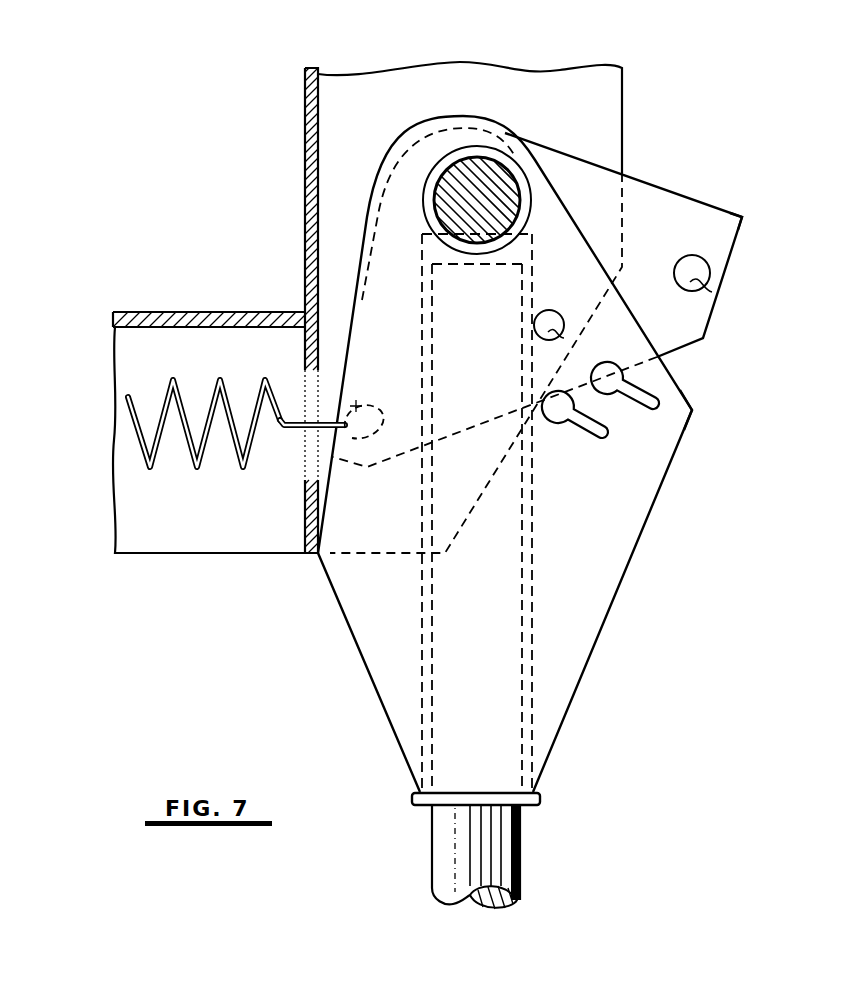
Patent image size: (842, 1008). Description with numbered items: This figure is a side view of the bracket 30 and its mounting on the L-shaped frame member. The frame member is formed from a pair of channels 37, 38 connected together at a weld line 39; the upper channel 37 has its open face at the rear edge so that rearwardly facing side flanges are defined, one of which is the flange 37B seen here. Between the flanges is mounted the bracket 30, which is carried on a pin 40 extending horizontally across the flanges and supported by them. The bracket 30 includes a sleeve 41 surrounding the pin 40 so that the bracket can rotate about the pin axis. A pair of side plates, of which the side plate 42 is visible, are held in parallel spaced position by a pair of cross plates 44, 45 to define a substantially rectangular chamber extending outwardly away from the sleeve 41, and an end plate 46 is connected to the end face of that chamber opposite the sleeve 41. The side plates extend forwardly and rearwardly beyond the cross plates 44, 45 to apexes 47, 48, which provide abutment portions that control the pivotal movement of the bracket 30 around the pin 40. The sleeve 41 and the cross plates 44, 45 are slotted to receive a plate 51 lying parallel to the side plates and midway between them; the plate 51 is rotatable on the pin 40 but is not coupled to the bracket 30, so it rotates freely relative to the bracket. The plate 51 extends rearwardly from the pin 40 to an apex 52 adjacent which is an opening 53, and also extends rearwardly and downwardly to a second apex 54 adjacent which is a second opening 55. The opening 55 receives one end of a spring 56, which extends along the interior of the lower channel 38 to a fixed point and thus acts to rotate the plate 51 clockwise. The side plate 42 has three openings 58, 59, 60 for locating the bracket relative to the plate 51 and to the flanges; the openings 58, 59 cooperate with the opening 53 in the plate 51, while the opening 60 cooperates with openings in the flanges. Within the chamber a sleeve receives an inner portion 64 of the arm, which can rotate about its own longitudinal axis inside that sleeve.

The bracket 30 is at (652, 529).
The channel 37 is at (303, 155).
The side flange 37B is at (612, 88).
The channel 38 is at (190, 310).
The weld line 39 is at (300, 338).
The pin 40 is at (492, 180).
The sleeve 41 is at (536, 199).
The side plate 42 is at (582, 580).
The cross plate 44 is at (534, 678).
The cross plate 45 is at (420, 680).
The end plate 46 is at (541, 801).
The apex 47 is at (698, 410).
The apex 48 is at (300, 555).
The plate 51 is at (703, 190).
The apex 52 is at (745, 220).
The opening 53 is at (708, 284).
The second apex 54 is at (307, 449).
The second opening 55 is at (365, 398).
The spring 56 is at (197, 470).
The opening 58 is at (564, 422).
The opening 59 is at (626, 390).
The opening 60 is at (550, 311).
The inner portion 64 is at (455, 831).